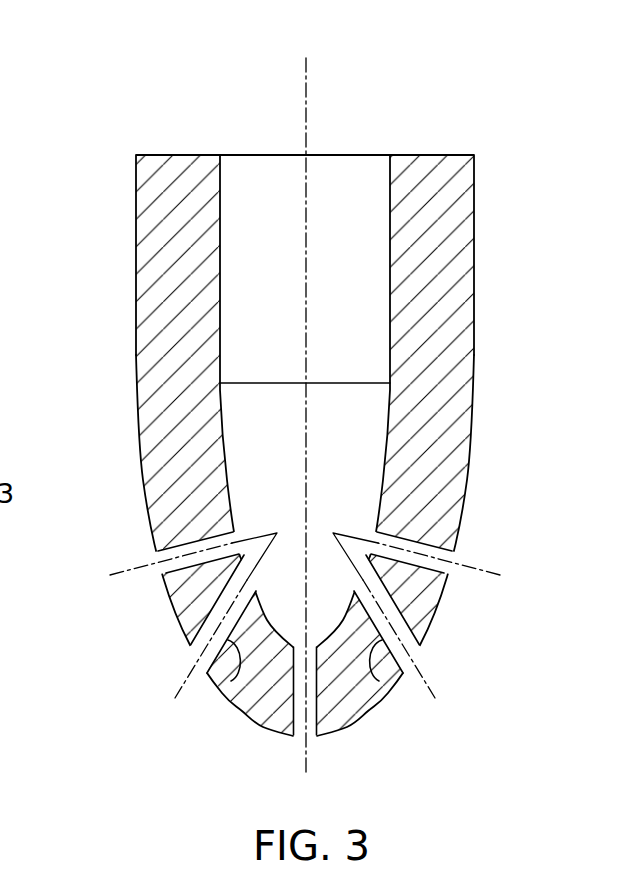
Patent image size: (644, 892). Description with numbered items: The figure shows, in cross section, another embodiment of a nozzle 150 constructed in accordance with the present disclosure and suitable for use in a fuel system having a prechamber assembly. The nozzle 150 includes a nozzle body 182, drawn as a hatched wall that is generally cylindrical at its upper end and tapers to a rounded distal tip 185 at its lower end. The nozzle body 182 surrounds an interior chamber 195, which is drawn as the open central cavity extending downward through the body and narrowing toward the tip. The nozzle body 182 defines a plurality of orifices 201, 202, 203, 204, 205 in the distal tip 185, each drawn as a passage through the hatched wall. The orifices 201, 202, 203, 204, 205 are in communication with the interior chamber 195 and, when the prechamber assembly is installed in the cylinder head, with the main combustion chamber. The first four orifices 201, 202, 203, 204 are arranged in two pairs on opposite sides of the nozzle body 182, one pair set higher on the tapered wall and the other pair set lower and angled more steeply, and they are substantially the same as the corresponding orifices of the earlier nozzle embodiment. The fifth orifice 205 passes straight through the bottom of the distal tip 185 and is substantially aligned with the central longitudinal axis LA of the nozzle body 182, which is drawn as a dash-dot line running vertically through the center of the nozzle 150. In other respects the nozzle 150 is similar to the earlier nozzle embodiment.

The nozzle 150 is at (314, 429).
The nozzle body 182 is at (136, 222).
The distal tip 185 is at (268, 735).
The interior chamber 195 is at (270, 413).
The orifice 201 is at (192, 538).
The orifice 202 is at (216, 697).
The orifice 203 is at (428, 542).
The orifice 204 is at (397, 605).
The fifth orifice 205 is at (317, 688).
The central longitudinal axis LA is at (305, 252).